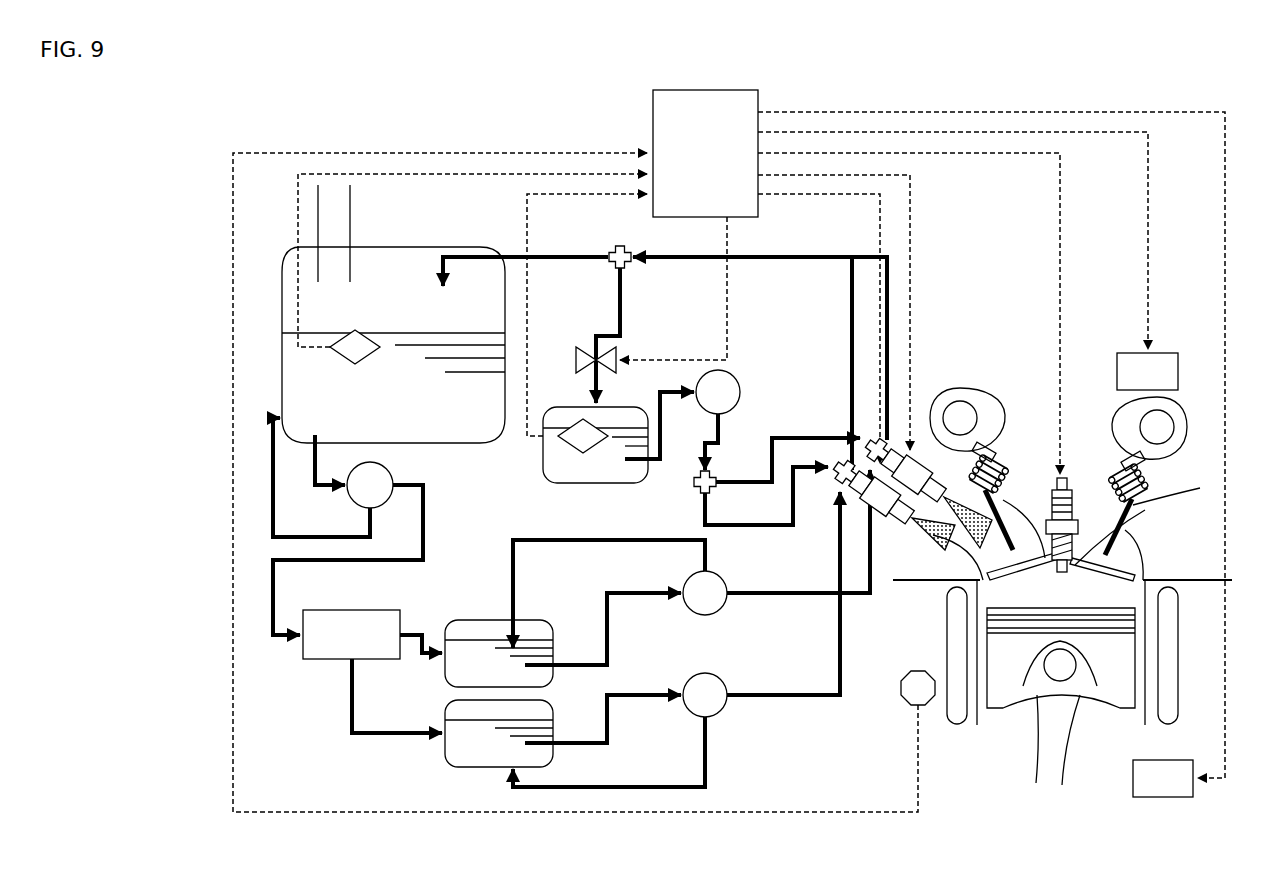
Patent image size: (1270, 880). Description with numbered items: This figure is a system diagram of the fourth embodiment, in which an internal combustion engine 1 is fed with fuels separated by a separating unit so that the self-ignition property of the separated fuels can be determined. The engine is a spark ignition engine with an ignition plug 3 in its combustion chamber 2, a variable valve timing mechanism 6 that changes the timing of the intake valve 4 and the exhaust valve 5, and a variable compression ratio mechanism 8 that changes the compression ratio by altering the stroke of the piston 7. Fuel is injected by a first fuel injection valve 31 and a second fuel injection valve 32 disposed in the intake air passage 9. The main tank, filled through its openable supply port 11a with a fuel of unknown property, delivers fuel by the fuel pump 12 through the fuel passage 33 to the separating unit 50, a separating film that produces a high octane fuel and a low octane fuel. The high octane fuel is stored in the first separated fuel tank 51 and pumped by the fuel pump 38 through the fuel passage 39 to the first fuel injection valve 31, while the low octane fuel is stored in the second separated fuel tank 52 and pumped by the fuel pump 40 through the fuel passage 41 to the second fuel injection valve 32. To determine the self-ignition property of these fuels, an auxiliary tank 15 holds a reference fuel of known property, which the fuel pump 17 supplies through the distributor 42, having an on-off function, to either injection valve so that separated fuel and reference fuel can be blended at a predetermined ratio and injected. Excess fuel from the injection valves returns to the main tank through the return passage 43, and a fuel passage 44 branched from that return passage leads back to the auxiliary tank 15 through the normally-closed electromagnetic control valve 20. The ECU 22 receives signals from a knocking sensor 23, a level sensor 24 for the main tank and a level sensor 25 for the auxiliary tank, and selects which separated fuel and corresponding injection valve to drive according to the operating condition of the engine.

The internal combustion engine 1 is at (1209, 684).
The combustion chamber 2 is at (996, 595).
The ignition plug 3 is at (1072, 496).
The intake valve 4 is at (1012, 522).
The exhaust valve 5 is at (1144, 514).
The variable valve timing mechanism 6 is at (1178, 375).
The piston 7 is at (1128, 673).
The variable compression ratio mechanism 8 is at (1175, 760).
The intake air passage 9 is at (944, 544).
The supply port 11a is at (350, 228).
The fuel pump 12 is at (392, 477).
The auxiliary tank 15 is at (590, 484).
The fuel pump 17 is at (743, 384).
The control valve 20 is at (576, 355).
The ECU 22 is at (653, 137).
The knocking sensor 23 is at (902, 702).
The level sensor 24 is at (368, 334).
The level sensor 25 is at (571, 419).
The first fuel injection valve 31 is at (932, 442).
The second fuel injection valve 32 is at (844, 507).
The fuel passage 33 is at (424, 522).
The fuel pump 38 is at (726, 580).
The fuel passage 39 is at (796, 597).
The fuel pump 40 is at (726, 680).
The fuel passage 41 is at (793, 699).
The distributor 42 is at (692, 488).
The return passage 43 is at (782, 259).
The fuel passage 44 is at (622, 310).
The separating unit 50 is at (346, 610).
The first separated fuel tank 51 is at (536, 620).
The second separated fuel tank 52 is at (551, 722).